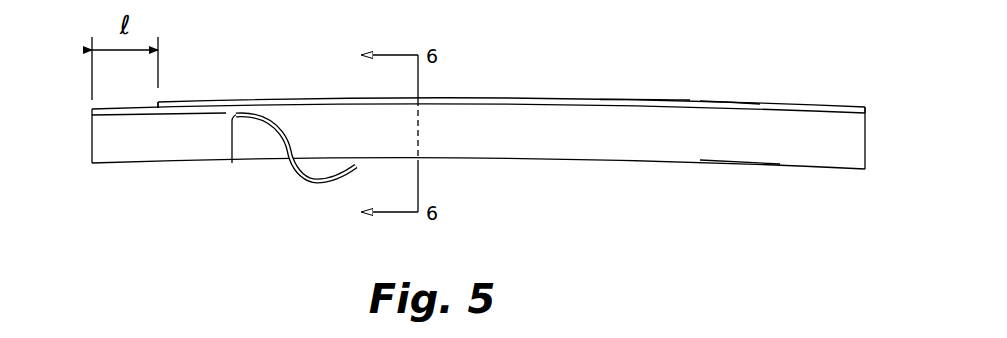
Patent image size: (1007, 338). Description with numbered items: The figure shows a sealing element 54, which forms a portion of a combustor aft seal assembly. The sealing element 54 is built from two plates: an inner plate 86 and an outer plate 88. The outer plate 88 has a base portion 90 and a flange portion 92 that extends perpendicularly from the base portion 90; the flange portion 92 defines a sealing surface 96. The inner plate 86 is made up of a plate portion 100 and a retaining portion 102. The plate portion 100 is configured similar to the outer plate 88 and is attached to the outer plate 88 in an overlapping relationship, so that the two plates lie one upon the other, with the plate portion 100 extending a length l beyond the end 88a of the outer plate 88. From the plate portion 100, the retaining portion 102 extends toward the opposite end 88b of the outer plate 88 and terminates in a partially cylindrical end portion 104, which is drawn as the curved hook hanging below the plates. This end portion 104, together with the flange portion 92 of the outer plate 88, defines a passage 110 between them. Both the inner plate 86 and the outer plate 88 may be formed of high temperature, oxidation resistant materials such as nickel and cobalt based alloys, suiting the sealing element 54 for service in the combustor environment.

The sealing element 54 is at (503, 76).
The inner plate 86 is at (87, 142).
The outer plate 88 is at (612, 96).
The end of outer plate 88a is at (158, 104).
The end of outer plate 88b is at (867, 128).
The base portion 90 is at (747, 170).
The flange portion 92 is at (753, 105).
The sealing surface 96 is at (690, 98).
The plate portion 100 is at (156, 150).
The retaining portion 102 is at (284, 143).
The end portion 104 is at (352, 185).
The passage 110 is at (345, 140).